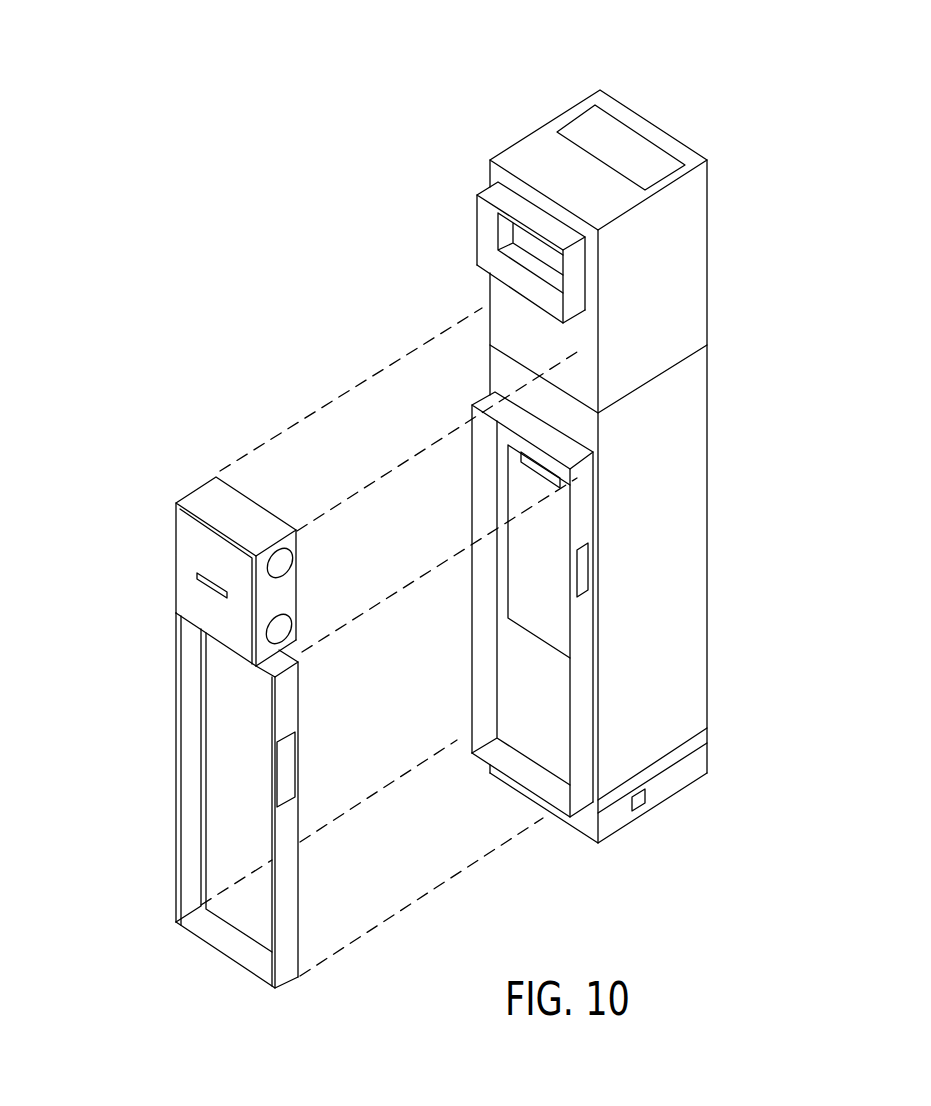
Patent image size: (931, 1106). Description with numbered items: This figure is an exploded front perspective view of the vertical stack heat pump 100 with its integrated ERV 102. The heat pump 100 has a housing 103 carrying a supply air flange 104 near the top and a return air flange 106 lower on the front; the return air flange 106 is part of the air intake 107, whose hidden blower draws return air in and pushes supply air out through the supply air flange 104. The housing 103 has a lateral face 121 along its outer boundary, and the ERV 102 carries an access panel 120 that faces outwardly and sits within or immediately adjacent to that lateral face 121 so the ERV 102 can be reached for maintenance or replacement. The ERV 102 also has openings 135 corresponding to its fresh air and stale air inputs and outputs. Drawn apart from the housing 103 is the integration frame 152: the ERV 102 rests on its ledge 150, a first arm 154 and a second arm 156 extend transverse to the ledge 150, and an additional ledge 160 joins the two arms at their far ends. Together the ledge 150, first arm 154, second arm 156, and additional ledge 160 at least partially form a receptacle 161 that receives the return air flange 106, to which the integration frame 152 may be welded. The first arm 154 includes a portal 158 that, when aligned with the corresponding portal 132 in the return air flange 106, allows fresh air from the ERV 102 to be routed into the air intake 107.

The heat pump 100 is at (468, 68).
The ERV 102 is at (241, 700).
The housing 103 is at (675, 435).
The supply air flange 104 is at (477, 232).
The return air flange 106 is at (581, 643).
The air intake 107 is at (540, 568).
The access panel 120 is at (237, 566).
The lateral face 121 is at (530, 720).
The portal 132 is at (582, 568).
The openings 135 is at (280, 560).
The ledge 150 is at (275, 652).
The integration frame 152 is at (335, 893).
The first arm 154 is at (234, 781).
The second arm 156 is at (187, 668).
The portal 158 is at (297, 778).
The additional ledge 160 is at (235, 945).
The receptacle 161 is at (230, 738).